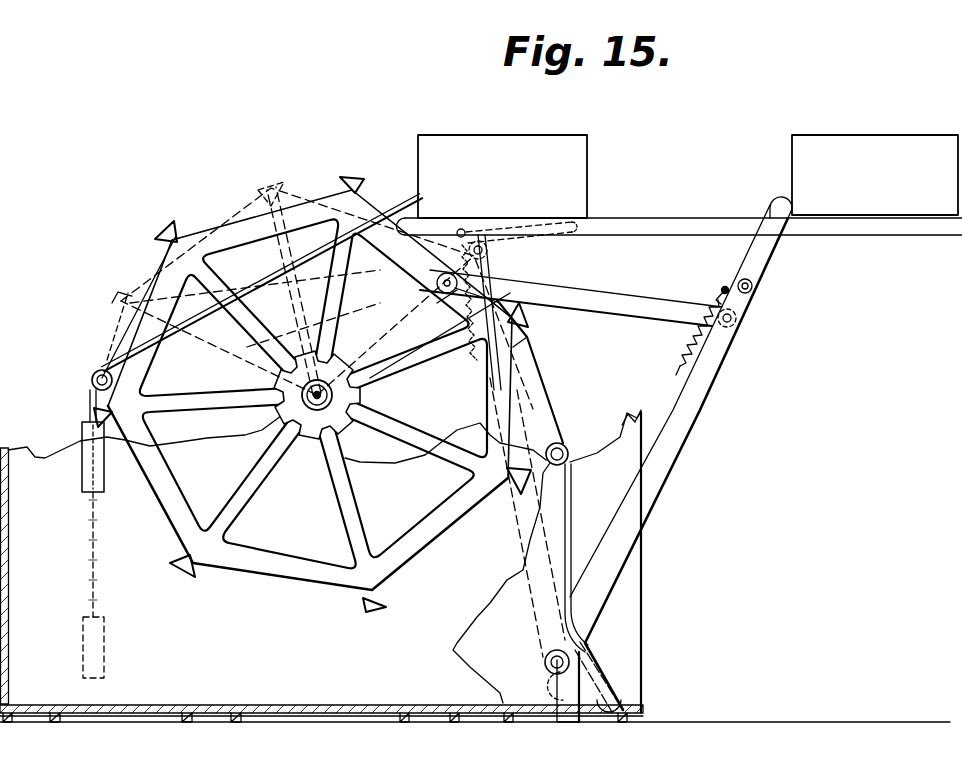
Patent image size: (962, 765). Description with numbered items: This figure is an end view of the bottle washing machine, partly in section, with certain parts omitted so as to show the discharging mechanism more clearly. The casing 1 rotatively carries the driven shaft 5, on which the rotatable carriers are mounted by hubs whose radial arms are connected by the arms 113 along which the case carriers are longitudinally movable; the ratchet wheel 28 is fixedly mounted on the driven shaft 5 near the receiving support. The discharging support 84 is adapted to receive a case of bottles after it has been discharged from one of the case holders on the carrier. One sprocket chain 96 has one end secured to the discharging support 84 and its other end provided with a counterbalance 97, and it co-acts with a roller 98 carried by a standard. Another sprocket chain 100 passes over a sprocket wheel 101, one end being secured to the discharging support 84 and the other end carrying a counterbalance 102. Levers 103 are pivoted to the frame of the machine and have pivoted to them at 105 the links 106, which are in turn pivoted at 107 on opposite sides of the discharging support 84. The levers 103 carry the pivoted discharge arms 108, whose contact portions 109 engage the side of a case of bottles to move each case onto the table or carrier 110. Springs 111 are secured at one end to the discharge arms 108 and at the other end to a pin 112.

The casing 1 is at (475, 566).
The driven shaft 5 is at (319, 402).
The ratchet wheel 28 is at (282, 400).
The discharging support 84 is at (413, 199).
The sprocket chain 96 is at (528, 373).
The counterbalance 97 is at (568, 720).
The roller 98 is at (562, 443).
The sprocket chain 100 is at (118, 352).
The sprocket wheel 101 is at (92, 380).
The counterbalance 102 is at (73, 534).
The levers 103 is at (680, 412).
The pivot 105 is at (737, 319).
The links 106 is at (609, 306).
The pivot 107 is at (434, 297).
The discharge arms 108 is at (505, 244).
The contact portions 109 is at (776, 203).
The table or carrier 110 is at (684, 228).
The springs 111 is at (687, 348).
The pin 112 is at (684, 370).
The arms 113 is at (337, 217).